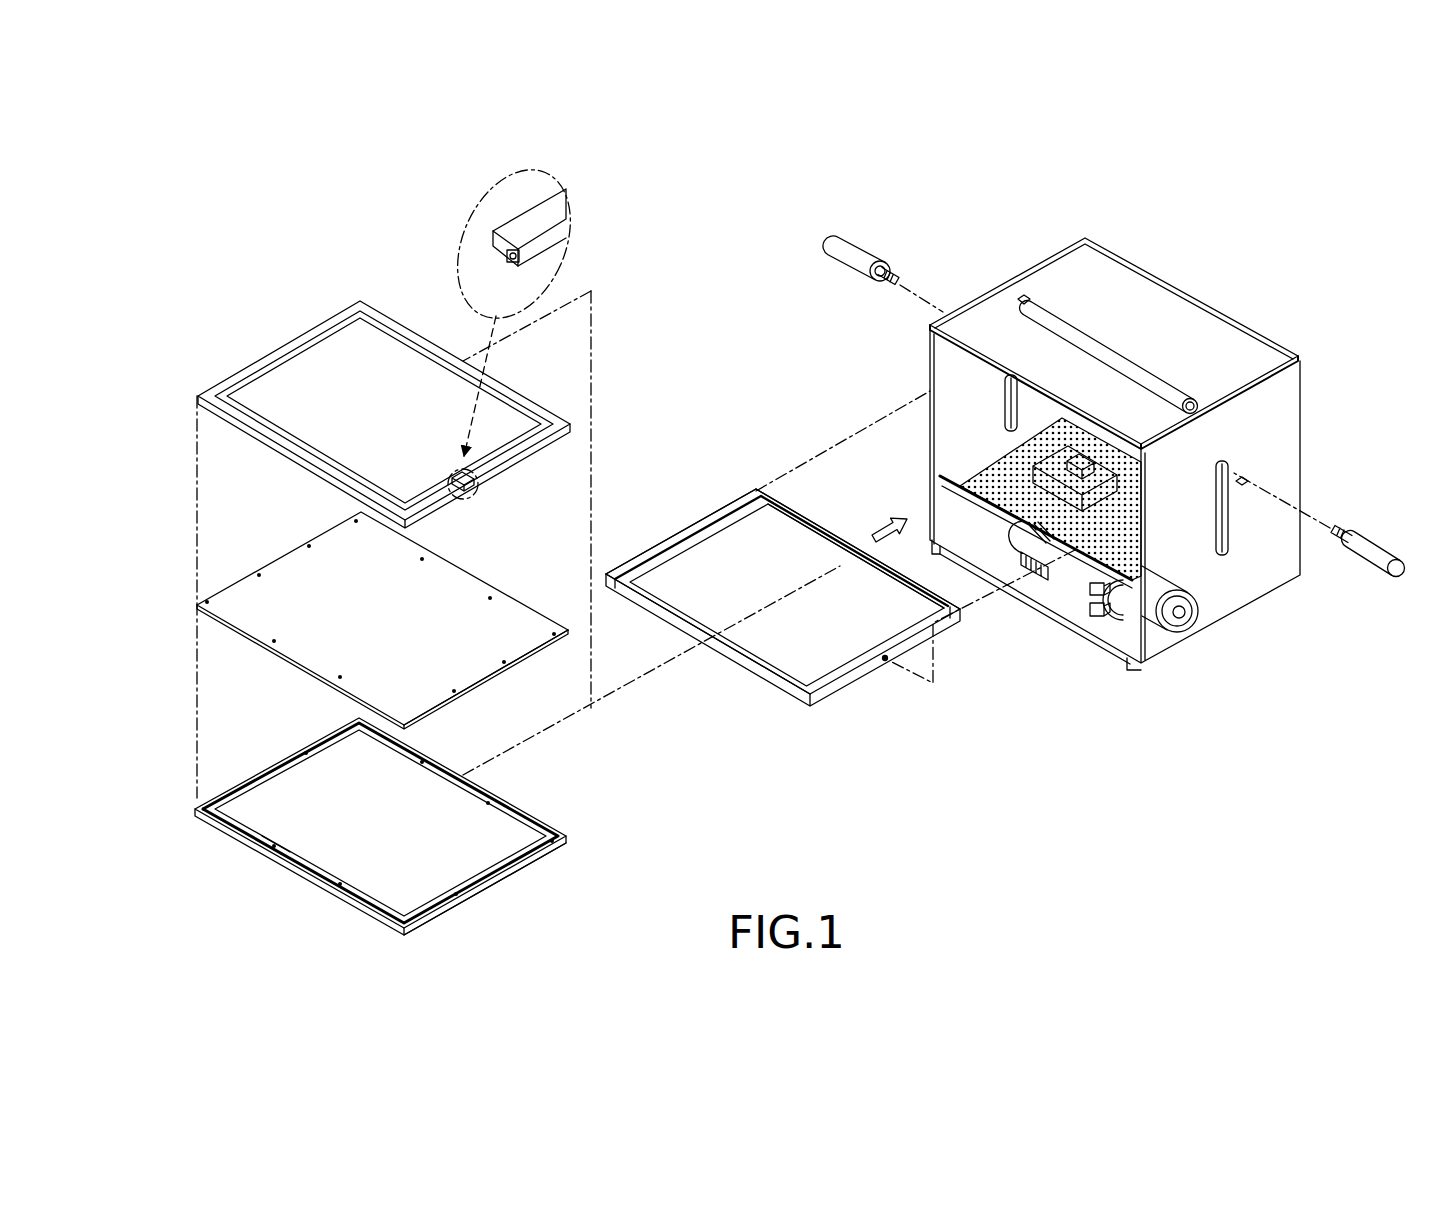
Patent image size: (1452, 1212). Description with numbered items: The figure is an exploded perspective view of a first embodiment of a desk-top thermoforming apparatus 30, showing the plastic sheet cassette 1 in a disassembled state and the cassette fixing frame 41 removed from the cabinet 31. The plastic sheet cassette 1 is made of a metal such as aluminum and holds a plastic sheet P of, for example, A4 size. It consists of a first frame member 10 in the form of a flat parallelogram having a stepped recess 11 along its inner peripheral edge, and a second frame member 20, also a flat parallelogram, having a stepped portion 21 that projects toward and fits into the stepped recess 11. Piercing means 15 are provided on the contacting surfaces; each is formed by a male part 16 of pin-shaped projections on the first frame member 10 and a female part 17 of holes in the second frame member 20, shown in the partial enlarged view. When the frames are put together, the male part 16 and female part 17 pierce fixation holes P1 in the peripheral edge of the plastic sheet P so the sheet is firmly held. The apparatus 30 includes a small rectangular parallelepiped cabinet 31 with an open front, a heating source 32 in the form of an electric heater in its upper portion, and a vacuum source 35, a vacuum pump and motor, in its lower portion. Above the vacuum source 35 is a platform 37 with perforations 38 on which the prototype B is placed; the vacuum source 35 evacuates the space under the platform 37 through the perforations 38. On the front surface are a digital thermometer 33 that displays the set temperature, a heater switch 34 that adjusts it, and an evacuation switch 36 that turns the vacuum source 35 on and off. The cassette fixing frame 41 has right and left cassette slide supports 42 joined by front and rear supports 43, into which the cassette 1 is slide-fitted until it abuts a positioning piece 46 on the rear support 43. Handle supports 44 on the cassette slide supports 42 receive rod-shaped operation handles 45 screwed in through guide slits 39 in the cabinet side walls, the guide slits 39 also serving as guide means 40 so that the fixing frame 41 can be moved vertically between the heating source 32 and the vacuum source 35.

The plastic sheet cassette 1 is at (163, 538).
The first frame member 10 is at (363, 762).
The stepped recess 11 is at (227, 823).
The piercing means 15 is at (472, 897).
The male part 16 is at (274, 852).
The female part 17 is at (511, 266).
The second frame member 20 is at (275, 433).
The stepped portion 21 is at (505, 258).
The thermoforming apparatus 30 is at (1110, 443).
The cabinet 31 is at (1162, 303).
The heating source 32 is at (1180, 375).
The digital thermometer 33 is at (1033, 577).
The heater switch 34 is at (1095, 597).
The vacuum source 35 is at (1182, 633).
The evacuation switch 36 is at (1097, 618).
The platform 37 is at (965, 455).
The perforations 38 is at (960, 482).
The guide slits 39 is at (1003, 400).
The guide means 40 is at (1217, 497).
The cassette fixing frame 41 is at (722, 503).
The cassette slide supports 42 is at (660, 560).
The front and rear supports 43 is at (823, 548).
The handle supports 44 is at (886, 663).
The operation handles 45 is at (843, 255).
The positioning piece 46 is at (798, 508).
The prototype B is at (1113, 487).
The plastic sheet P is at (472, 668).
The fixation holes P1 is at (429, 714).